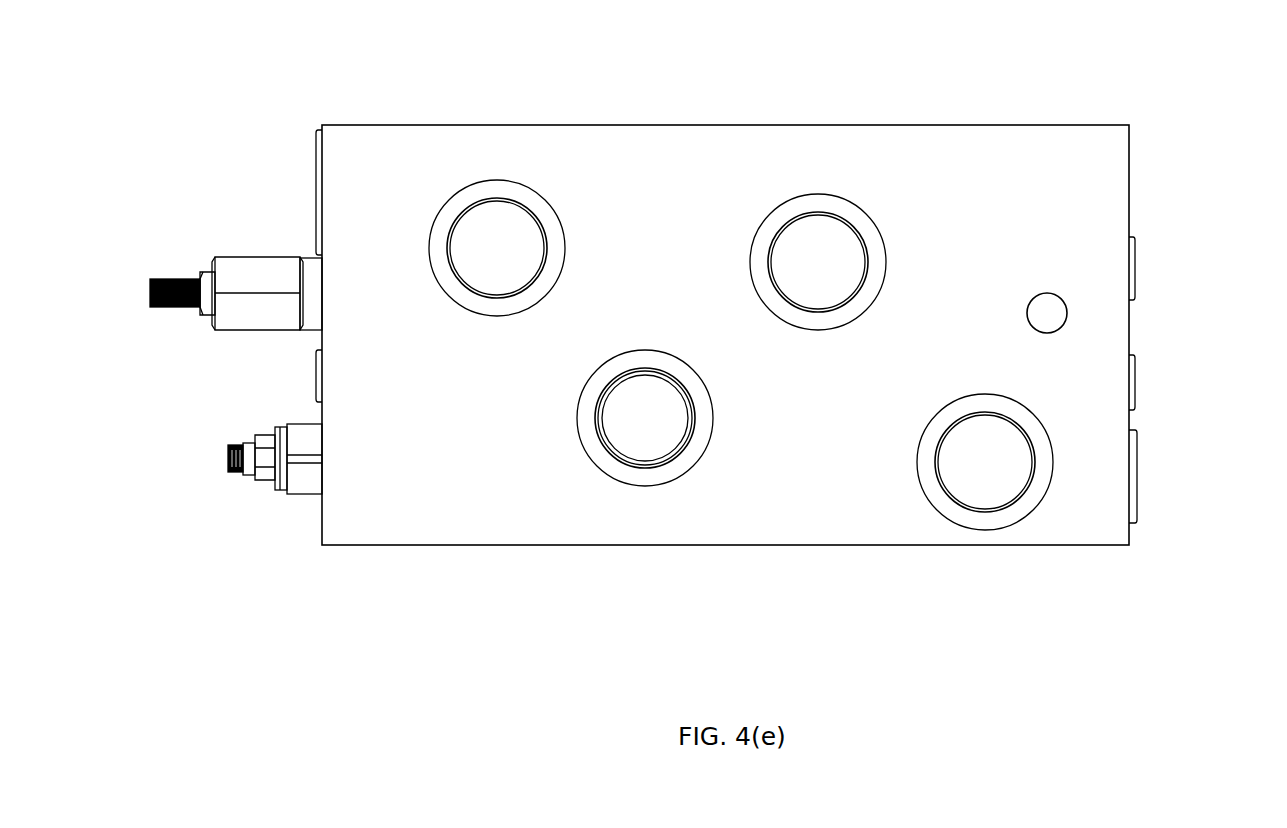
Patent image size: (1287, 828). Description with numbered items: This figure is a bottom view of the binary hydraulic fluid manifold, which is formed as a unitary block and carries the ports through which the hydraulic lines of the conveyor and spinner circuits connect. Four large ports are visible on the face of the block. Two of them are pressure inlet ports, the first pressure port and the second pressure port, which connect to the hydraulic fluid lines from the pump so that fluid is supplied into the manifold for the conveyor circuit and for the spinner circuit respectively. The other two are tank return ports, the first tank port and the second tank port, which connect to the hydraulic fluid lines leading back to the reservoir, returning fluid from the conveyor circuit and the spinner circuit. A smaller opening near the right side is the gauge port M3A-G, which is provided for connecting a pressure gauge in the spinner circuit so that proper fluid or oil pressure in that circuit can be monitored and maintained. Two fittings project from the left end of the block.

The pressure gauge port M3A-G is at (1066, 292).